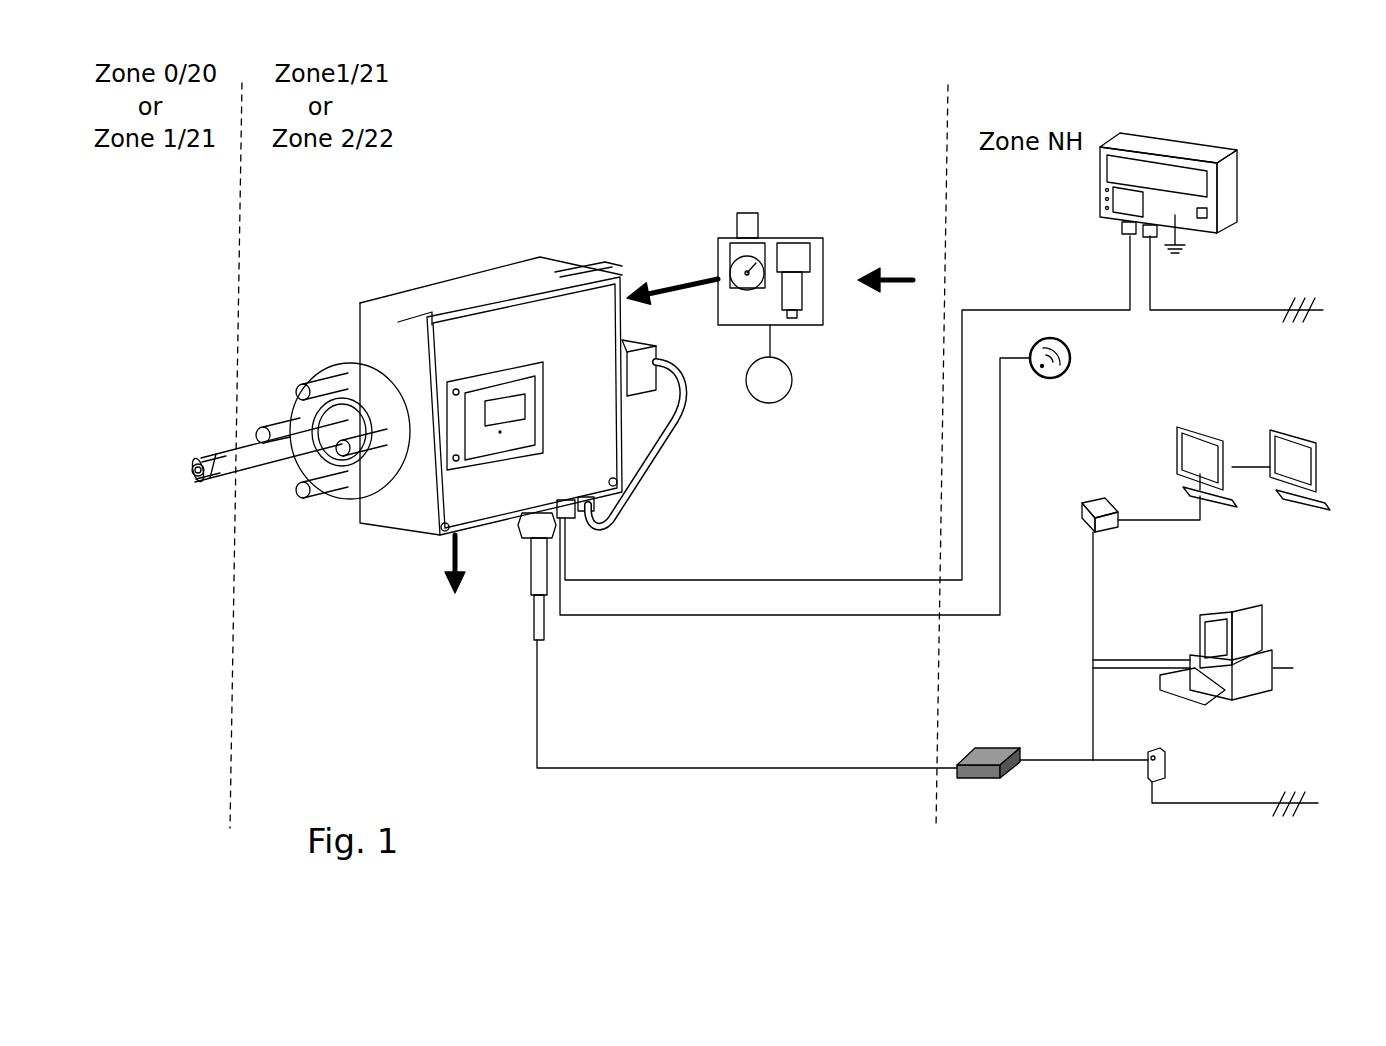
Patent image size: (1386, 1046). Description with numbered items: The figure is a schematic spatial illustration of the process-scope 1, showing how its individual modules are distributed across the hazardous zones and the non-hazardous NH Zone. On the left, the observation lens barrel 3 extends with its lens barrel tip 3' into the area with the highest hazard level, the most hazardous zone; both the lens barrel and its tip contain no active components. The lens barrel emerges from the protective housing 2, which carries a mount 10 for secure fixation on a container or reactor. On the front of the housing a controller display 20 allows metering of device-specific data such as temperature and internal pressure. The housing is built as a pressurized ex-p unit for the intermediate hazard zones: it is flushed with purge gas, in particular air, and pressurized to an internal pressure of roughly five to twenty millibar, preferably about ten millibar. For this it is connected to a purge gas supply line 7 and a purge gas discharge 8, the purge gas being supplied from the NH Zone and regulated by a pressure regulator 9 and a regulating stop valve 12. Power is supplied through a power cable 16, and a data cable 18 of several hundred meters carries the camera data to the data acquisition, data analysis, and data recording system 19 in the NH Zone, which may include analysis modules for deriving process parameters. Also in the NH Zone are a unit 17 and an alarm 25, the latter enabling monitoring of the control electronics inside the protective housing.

The process-scope 1 is at (661, 153).
The protective housing 2 is at (485, 285).
The observation lens barrel 3 is at (269, 509).
The lens barrel tip 3' is at (193, 418).
The purge gas supply line 7 is at (680, 280).
The purge gas discharge 8 is at (450, 553).
The pressure regulator 9 is at (832, 346).
The mount 10 is at (325, 385).
The regulating stop valve 12 is at (642, 380).
The power cable 16 is at (831, 580).
The unit 17 is at (1192, 150).
The data cable 18 is at (718, 768).
The data acquisition, data analysis, and data recording system 19 is at (1332, 830).
The controller display 20 is at (500, 440).
The alarm 25 is at (1062, 375).